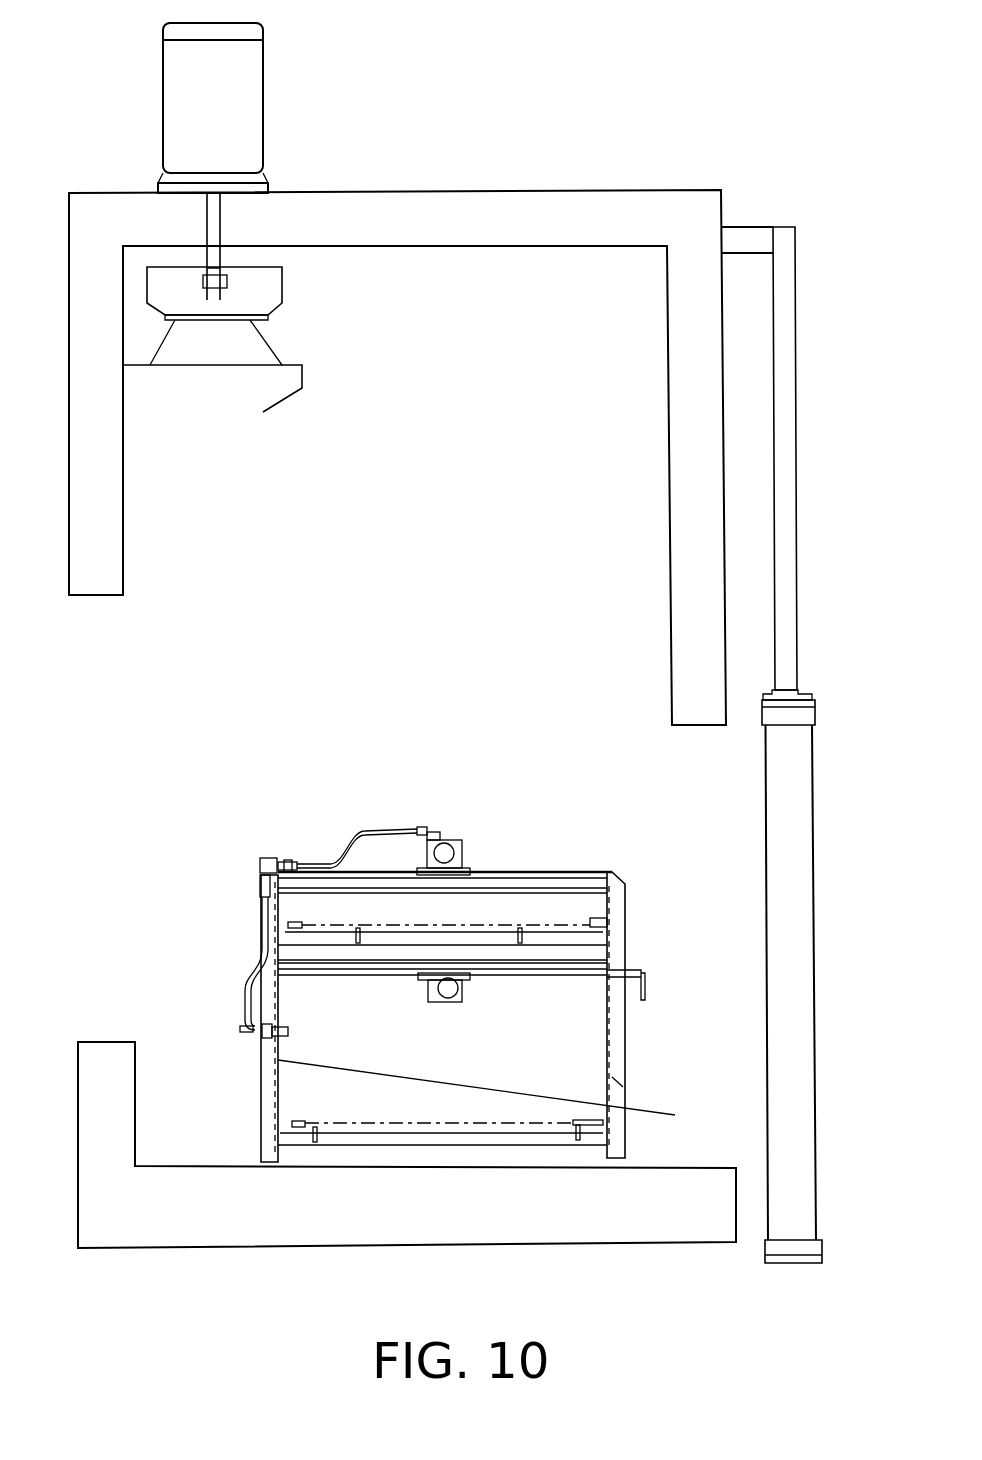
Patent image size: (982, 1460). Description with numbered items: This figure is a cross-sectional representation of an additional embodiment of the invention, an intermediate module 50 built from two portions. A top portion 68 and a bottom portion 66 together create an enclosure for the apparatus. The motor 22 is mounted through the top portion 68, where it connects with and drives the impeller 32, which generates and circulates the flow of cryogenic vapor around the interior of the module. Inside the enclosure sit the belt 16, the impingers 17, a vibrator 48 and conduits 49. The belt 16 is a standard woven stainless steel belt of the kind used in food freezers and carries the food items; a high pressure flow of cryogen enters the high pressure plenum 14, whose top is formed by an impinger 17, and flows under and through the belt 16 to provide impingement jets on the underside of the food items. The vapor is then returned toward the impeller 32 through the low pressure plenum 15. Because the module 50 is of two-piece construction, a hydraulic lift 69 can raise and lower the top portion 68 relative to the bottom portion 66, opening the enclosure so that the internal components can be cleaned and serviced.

The high pressure plenum 14 is at (468, 981).
The low pressure plenum 15 is at (266, 409).
The belt 16 is at (608, 920).
The impinger 17 is at (612, 870).
The motor 22 is at (263, 97).
The impeller 32 is at (282, 285).
The vibrator 48 is at (472, 856).
The conduit 49 is at (355, 853).
The intermediate module 50 is at (421, 404).
The bottom portion 66 is at (135, 1098).
The top portion 68 is at (480, 244).
The hydraulic lift 69 is at (814, 900).